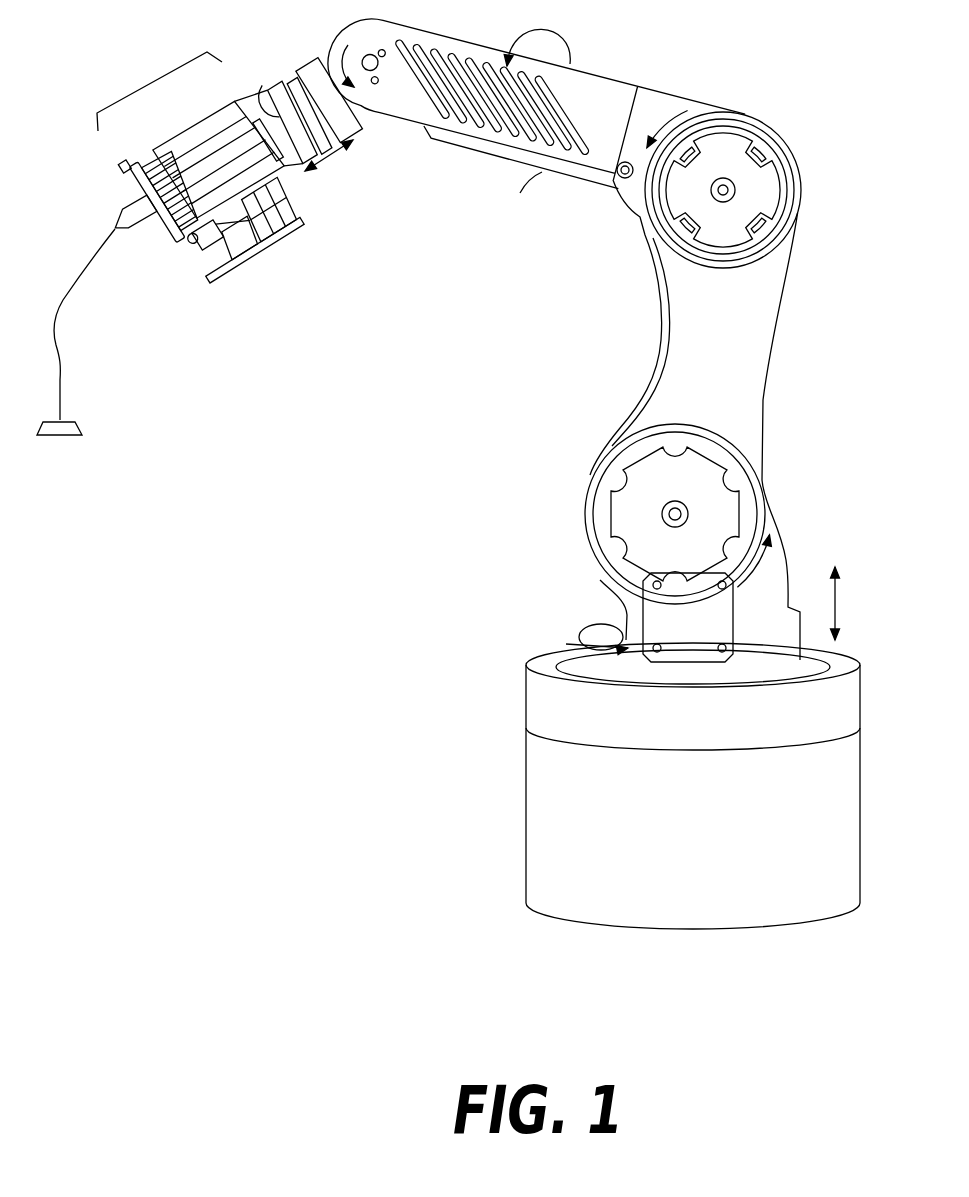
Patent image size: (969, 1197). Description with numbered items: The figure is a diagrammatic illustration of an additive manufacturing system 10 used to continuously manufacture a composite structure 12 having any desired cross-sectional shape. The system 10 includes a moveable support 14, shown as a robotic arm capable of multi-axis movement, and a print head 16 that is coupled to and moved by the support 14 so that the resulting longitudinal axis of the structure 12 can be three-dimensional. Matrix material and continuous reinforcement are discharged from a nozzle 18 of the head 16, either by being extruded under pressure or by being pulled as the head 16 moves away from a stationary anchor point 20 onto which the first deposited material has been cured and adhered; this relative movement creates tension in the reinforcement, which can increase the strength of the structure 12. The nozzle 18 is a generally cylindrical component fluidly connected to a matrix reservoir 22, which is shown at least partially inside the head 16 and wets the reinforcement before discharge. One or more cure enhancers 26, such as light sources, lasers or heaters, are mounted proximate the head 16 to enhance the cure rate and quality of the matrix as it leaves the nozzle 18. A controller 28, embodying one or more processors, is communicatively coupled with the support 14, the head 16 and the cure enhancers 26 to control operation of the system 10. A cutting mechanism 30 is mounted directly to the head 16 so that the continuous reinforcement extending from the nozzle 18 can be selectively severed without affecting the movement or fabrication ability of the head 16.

The system 10 is at (386, 663).
The composite structure 12 is at (62, 372).
The moveable support 14 is at (696, 391).
The print head 16 is at (152, 80).
The nozzle 18 is at (133, 214).
The anchor point 20 is at (62, 436).
The matrix reservoir 22 is at (258, 139).
The cure enhancer 26 is at (168, 196).
The controller 28 is at (678, 632).
The cutting mechanism 30 is at (243, 230).